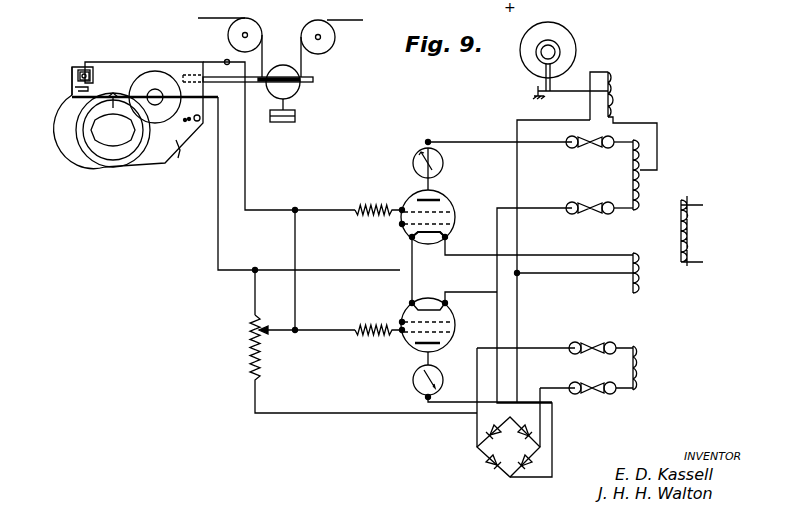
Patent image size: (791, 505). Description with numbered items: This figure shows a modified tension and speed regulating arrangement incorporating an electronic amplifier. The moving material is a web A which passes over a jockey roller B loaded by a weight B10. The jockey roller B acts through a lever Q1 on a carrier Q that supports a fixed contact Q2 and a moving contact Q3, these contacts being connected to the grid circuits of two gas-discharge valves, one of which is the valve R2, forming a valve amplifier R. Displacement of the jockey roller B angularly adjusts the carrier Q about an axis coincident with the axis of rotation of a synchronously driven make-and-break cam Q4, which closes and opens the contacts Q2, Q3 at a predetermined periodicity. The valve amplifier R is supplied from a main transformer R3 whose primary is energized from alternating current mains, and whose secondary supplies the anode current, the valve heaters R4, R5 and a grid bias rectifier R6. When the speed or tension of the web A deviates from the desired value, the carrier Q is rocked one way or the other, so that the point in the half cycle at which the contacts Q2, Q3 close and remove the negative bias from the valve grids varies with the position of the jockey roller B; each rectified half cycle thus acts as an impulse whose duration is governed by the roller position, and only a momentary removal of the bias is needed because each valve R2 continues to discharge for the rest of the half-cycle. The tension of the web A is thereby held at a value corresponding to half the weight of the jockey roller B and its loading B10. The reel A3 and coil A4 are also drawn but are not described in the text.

The web A is at (217, 6).
The supply reel A3 is at (560, 52).
The solenoid coil A4 is at (618, 107).
The jockey roller B is at (300, 87).
The weight B10 is at (295, 115).
The carrier Q is at (118, 78).
The lever Q1 is at (312, 78).
The fixed contact Q2 is at (88, 72).
The moving contact Q3 is at (74, 68).
The make-and-break cam Q4 is at (118, 136).
The valve amplifier R is at (403, 190).
The gas-discharge valve R2 is at (448, 326).
The main transformer R3 is at (664, 203).
The valve heater R4 is at (430, 233).
The valve heater R5 is at (438, 313).
The grid bias rectifier R6 is at (508, 447).